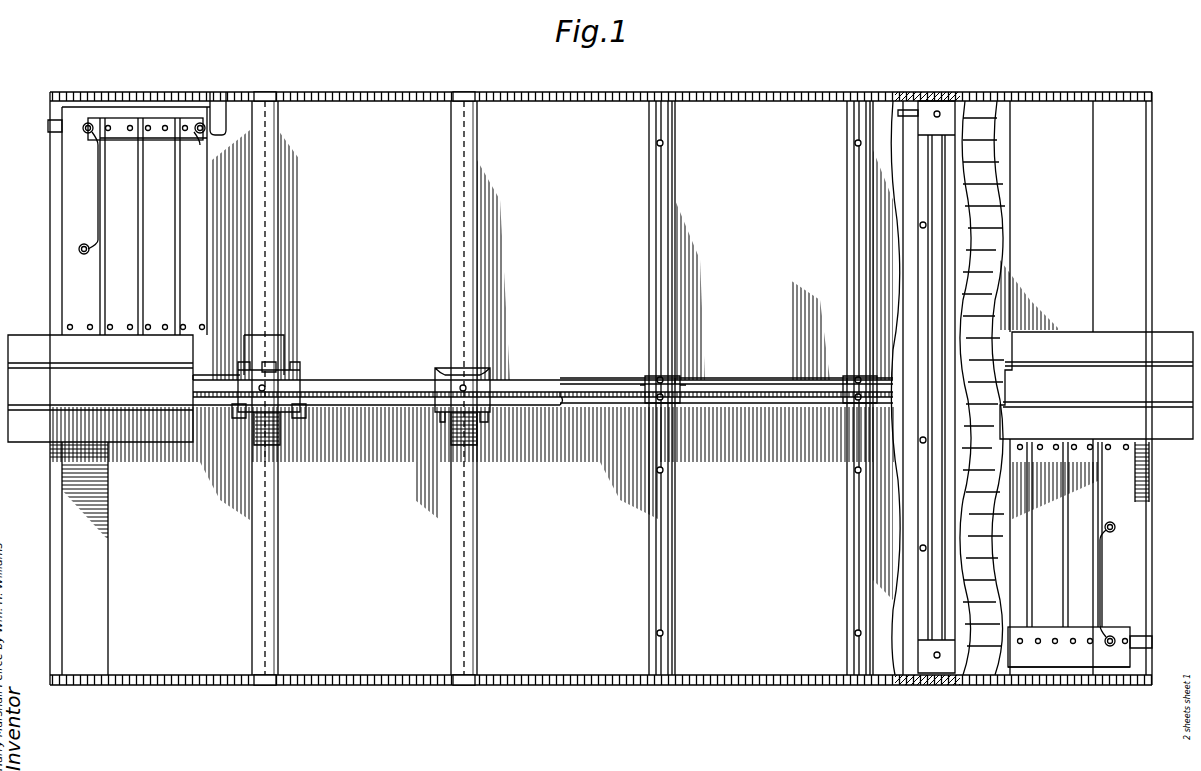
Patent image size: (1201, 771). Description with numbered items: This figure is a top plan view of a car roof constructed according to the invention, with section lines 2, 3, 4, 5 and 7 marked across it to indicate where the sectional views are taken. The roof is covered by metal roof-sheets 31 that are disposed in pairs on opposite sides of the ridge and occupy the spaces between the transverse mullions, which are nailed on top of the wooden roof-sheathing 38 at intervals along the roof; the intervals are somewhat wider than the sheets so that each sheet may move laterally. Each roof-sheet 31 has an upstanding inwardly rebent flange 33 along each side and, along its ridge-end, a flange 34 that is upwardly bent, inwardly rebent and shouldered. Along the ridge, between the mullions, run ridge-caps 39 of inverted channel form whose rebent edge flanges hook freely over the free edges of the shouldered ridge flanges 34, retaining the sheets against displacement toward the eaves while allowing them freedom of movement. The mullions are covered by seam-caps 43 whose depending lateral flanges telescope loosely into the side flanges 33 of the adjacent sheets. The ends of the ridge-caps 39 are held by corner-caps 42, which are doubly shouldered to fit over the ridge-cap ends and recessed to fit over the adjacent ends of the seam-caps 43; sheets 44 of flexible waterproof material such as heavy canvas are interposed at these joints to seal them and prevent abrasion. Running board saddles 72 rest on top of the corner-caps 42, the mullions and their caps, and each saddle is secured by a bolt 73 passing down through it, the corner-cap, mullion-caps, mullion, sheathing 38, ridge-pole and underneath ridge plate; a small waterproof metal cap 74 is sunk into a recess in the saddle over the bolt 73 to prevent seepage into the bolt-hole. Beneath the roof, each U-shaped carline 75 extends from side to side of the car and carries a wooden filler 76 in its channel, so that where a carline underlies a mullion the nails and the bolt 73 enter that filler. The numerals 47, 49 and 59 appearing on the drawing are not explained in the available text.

The roof-sheet 31 is at (465, 358).
The upstanding inwardly rebent flange 33 is at (650, 196).
The ridge-end flange 34 is at (596, 378).
The wooden roof-sheathing 38 is at (975, 135).
The ridge-cap 39 is at (386, 389).
The corner-cap 42 is at (285, 385).
The seam-cap 43 is at (272, 146).
The sheet of flexible waterproof material 44 is at (280, 412).
The mullion end cap 47 is at (265, 101).
The joint connector 49 is at (680, 378).
The central joint fitting 59 is at (437, 333).
The running board saddle 72 is at (272, 336).
The bolt 73 is at (275, 370).
The waterproof metal cap 74 is at (950, 573).
The carline 75 is at (930, 156).
The wooden filler 76 is at (938, 188).
The section line 2- 2 is at (265, 675).
The section line 3- 3 is at (536, 580).
The section line 4- 4 is at (463, 720).
The section line 5- 5 is at (431, 501).
The section line 7- 7 is at (398, 718).